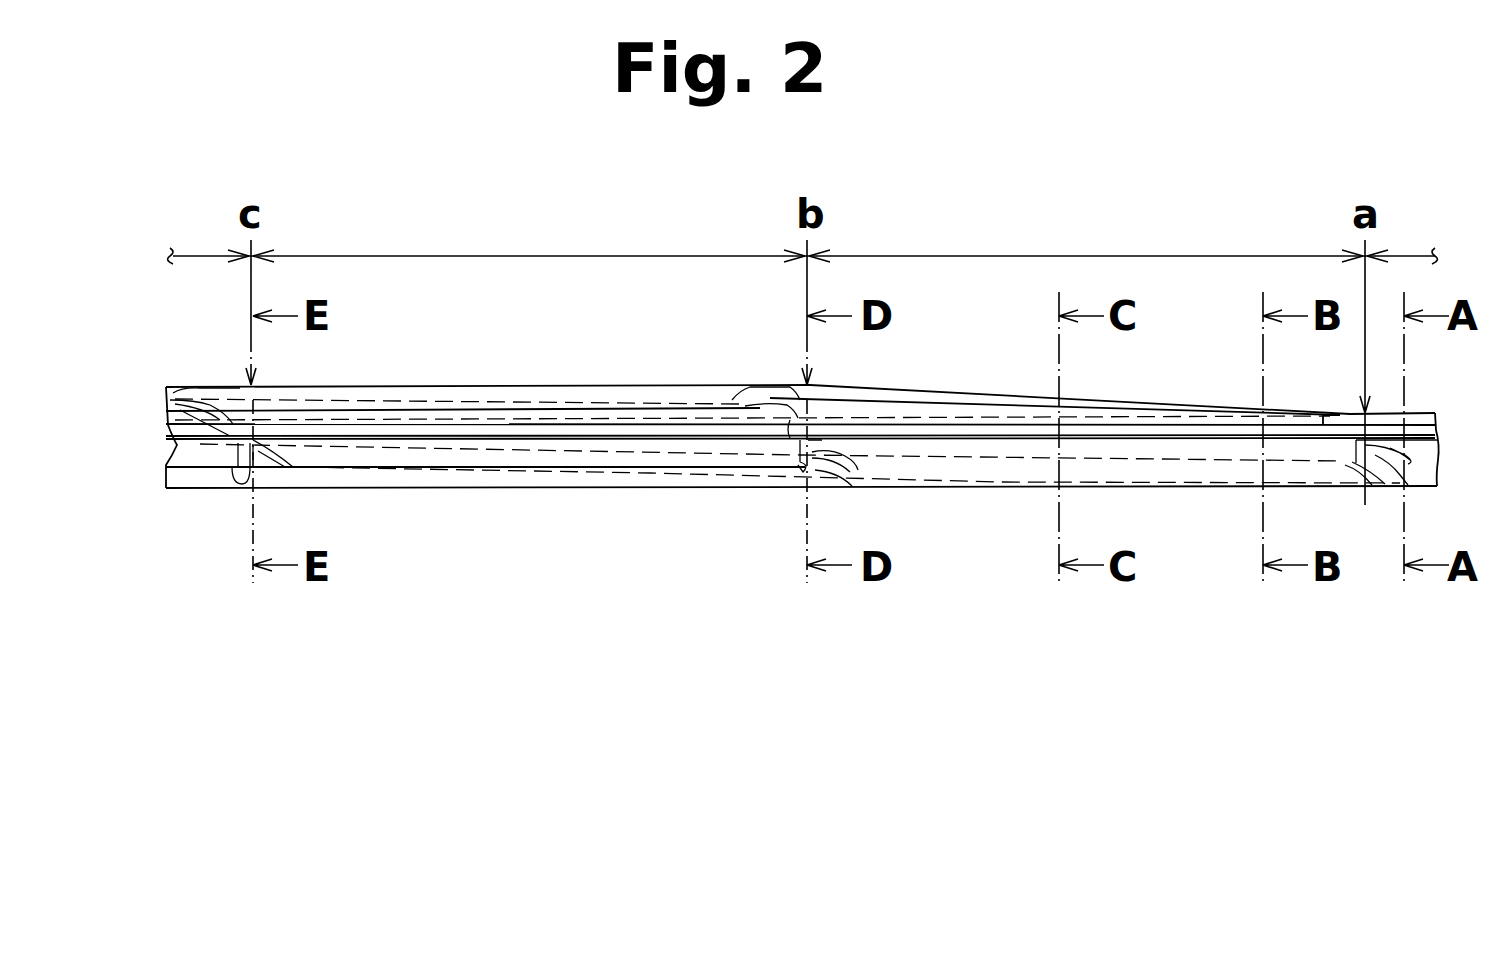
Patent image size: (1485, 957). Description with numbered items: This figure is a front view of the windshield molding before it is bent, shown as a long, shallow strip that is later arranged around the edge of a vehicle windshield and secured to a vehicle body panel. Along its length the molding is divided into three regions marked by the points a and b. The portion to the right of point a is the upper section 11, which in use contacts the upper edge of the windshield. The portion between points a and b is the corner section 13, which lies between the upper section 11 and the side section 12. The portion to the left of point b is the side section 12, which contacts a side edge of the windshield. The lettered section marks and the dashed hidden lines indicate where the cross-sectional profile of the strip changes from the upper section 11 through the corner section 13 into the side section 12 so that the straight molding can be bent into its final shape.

The upper section 11 is at (1382, 481).
The side section 12 is at (532, 489).
The corner section 13 is at (1167, 487).